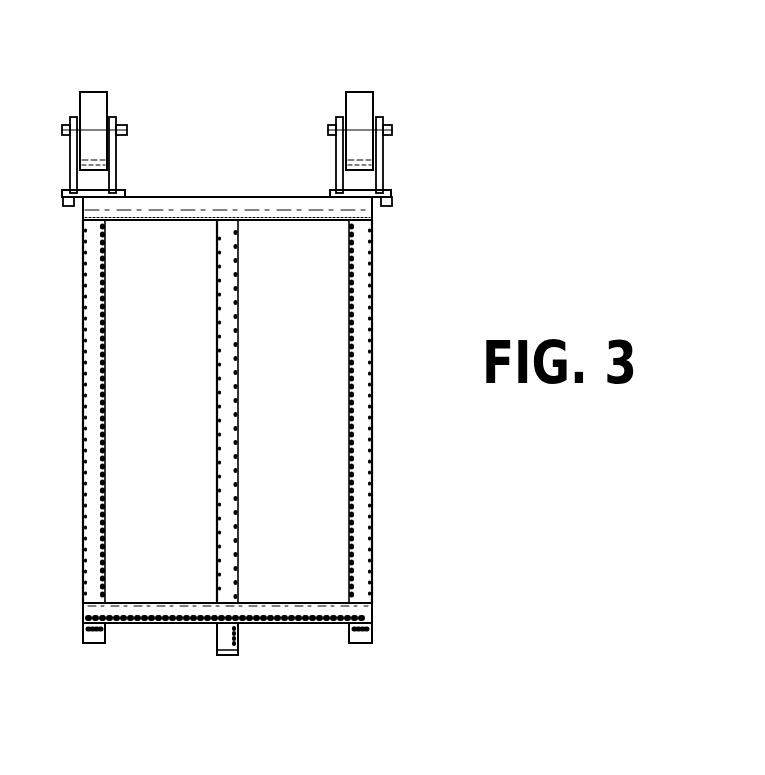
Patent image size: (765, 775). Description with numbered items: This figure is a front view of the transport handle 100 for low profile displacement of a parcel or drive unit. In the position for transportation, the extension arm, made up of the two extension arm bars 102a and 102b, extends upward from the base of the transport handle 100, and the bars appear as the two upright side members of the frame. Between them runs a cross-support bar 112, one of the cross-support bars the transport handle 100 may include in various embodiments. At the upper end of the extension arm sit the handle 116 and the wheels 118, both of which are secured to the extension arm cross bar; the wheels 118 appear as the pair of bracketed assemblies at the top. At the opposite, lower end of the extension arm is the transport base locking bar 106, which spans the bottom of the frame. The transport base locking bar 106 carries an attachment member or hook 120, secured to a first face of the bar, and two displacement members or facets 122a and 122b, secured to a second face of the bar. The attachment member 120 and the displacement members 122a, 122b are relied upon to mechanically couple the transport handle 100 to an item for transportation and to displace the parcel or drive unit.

The transport handle 100 is at (462, 535).
The extension arm bar 102a is at (355, 465).
The extension arm bar 102b is at (92, 465).
The transport base locking bar 106 is at (290, 608).
The cross-support bar 112 is at (227, 465).
The handle 116 is at (262, 211).
The wheels 118 is at (227, 124).
The attachment member or hook 120 is at (225, 639).
The displacement member or facet 122a is at (362, 637).
The displacement member or facet 122b is at (105, 638).